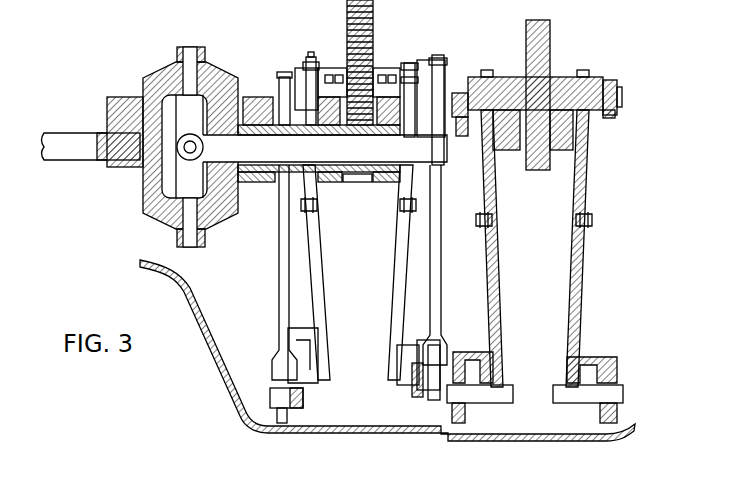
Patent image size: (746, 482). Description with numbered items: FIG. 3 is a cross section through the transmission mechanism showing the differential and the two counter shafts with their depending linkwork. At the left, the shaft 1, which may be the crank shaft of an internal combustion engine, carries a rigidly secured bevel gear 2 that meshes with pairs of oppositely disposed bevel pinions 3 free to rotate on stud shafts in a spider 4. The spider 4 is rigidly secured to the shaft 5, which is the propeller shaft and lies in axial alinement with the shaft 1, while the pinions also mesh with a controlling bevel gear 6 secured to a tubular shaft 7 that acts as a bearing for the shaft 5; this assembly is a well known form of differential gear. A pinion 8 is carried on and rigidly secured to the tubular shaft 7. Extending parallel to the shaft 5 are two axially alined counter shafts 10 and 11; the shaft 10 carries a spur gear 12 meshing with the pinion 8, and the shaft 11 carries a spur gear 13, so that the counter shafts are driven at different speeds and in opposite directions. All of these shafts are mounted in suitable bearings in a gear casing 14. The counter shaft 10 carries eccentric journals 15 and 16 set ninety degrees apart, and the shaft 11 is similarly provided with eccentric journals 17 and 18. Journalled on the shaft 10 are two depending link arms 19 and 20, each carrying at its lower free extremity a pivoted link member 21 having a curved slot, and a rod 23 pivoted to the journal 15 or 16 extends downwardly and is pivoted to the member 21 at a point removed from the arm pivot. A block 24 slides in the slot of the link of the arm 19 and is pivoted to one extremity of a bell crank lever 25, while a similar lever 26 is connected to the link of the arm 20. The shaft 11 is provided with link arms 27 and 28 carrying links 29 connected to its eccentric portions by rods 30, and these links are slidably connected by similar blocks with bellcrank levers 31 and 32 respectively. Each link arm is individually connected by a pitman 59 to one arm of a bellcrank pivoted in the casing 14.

The shaft 1 is at (67, 141).
The bevel gear 2 is at (143, 84).
The bevel pinions 3 is at (205, 67).
The spider 4 is at (206, 236).
The shaft 5 is at (325, 148).
The controlling bevel gear 6 is at (240, 84).
The tubular shaft 7 is at (280, 175).
The pinion 8 is at (355, 182).
The counter shaft 10 is at (306, 62).
The counter shaft 11 is at (503, 87).
The spur gear 12 is at (369, 46).
The spur gear 13 is at (550, 43).
The gear casing 14 is at (213, 345).
The eccentric journal 15 is at (281, 86).
The eccentric journal 16 is at (441, 60).
The eccentric journal 17 is at (453, 92).
The eccentric journal 18 is at (621, 92).
The link arm 19 is at (319, 267).
The link arm 20 is at (403, 267).
The link member 21 is at (295, 337).
The rod 23 is at (279, 267).
The block 24 is at (276, 415).
The bell crank lever 25 is at (304, 406).
The bell crank lever 26 is at (412, 395).
The link arm 27 is at (495, 267).
The link arm 28 is at (577, 268).
The links 29 is at (495, 362).
The rods 30 is at (463, 137).
The bellcrank lever 31 is at (478, 356).
The bellcrank lever 32 is at (593, 365).
The pitman 59 is at (318, 210).